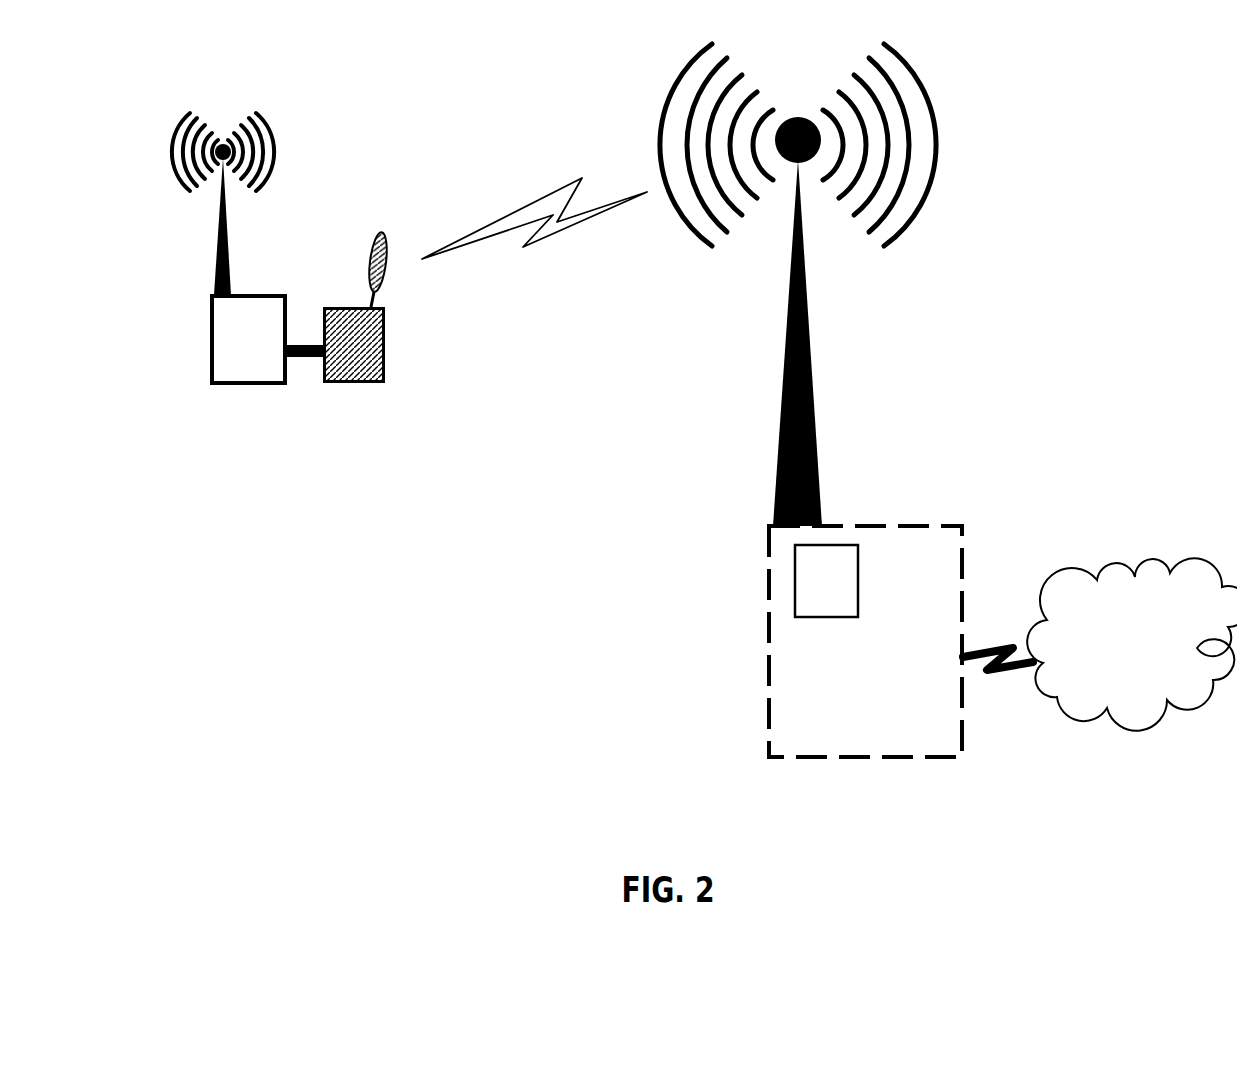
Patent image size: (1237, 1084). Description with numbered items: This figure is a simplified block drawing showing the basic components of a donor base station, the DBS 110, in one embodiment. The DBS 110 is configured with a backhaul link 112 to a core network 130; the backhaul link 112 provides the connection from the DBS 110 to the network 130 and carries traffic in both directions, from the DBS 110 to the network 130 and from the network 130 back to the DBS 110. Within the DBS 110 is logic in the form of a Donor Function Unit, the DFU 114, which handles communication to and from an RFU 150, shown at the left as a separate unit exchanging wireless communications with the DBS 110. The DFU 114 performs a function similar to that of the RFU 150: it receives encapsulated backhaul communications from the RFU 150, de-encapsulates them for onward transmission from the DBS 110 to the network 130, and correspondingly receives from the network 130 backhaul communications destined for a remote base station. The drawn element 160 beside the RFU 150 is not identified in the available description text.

The donor base station 110 is at (865, 526).
The backhaul link 112 is at (1010, 645).
The Donor Function Unit 114 is at (795, 582).
The core network 130 is at (1118, 560).
The RFU 150 is at (353, 385).
The base station 160 is at (248, 385).